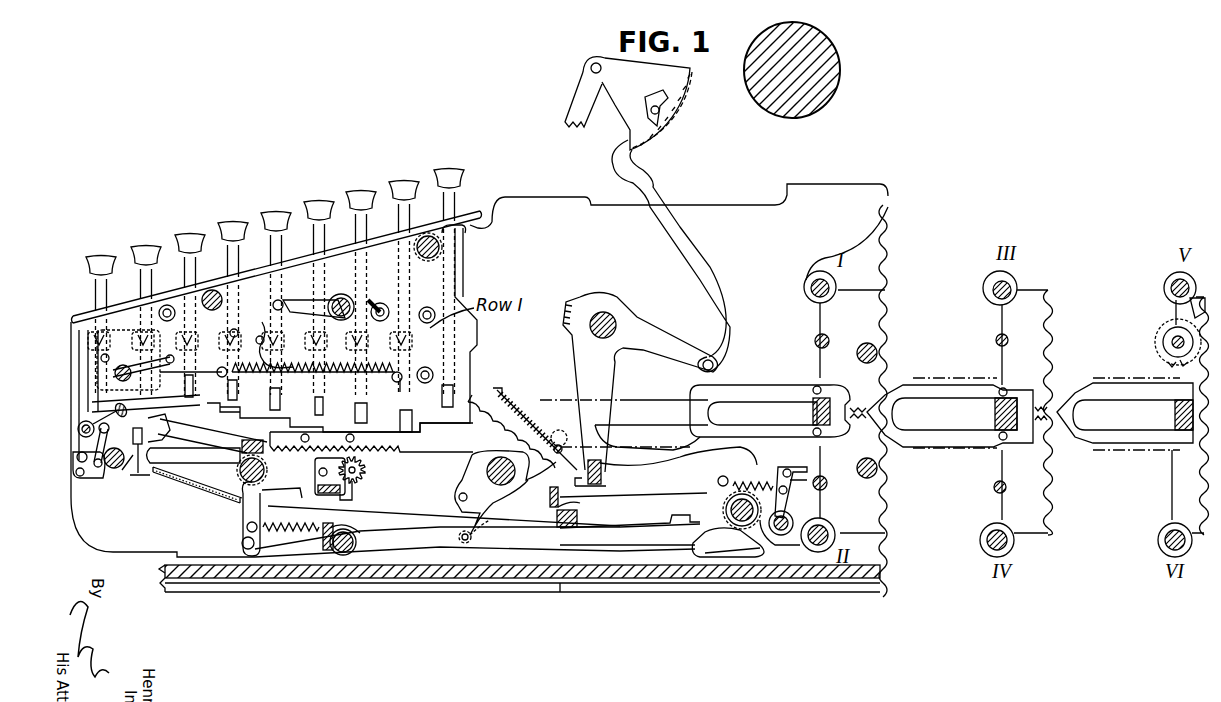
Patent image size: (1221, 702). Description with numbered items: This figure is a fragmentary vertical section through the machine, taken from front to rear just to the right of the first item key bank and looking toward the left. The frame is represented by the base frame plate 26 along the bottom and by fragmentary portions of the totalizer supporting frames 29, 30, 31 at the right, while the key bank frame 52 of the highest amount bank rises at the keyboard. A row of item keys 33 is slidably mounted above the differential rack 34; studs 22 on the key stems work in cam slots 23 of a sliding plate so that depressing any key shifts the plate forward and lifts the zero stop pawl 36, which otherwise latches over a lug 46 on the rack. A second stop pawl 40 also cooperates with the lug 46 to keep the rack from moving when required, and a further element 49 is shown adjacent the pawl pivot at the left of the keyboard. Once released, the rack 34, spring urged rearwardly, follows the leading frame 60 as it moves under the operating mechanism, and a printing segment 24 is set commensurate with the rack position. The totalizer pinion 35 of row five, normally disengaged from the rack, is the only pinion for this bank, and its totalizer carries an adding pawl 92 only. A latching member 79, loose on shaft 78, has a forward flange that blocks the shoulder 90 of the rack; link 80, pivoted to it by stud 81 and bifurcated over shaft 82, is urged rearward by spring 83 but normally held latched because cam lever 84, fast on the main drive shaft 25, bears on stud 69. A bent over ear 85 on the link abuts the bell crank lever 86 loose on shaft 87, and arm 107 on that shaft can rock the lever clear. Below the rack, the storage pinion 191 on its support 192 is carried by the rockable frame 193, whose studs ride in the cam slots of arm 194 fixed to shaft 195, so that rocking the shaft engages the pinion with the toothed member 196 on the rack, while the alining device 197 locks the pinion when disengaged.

The studs 22 is at (262, 335).
The cam slots 23 is at (275, 348).
The printing segment 24 is at (673, 120).
The main drive shaft 25 is at (487, 471).
The base frame plate 26 is at (410, 572).
The totalizer supporting frame 29 is at (876, 294).
The totalizer supporting frame 30 is at (1036, 300).
The totalizer supporting frame 31 is at (1183, 308).
The item keys 33 is at (190, 236).
The differential rack 34 is at (545, 405).
The totalizer pinion 35 is at (1155, 338).
The zero stop pawl 36 is at (152, 436).
The second stop pawl 40 is at (187, 404).
The lug 46 is at (120, 474).
The pivot 49 is at (88, 432).
The key bank frame 52 is at (436, 268).
The leading frame 60 is at (603, 478).
The stud 69 is at (467, 542).
The shaft 78 is at (262, 478).
The latching member 79 is at (190, 484).
The link 80 is at (448, 508).
The stud 81 is at (243, 543).
The shaft 82 is at (728, 505).
The spring 83 is at (275, 530).
The cam lever 84 is at (488, 513).
The bent over ear 85 is at (675, 520).
The bell crank lever 86 is at (792, 508).
The shaft 87 is at (783, 537).
The shoulder 90 is at (140, 476).
The adding pawl 92 is at (1197, 302).
The arm 107 is at (745, 552).
The storage pinion 191 is at (366, 470).
The support 192 is at (368, 488).
The rockable frame 193 is at (262, 494).
The camming arm 194 is at (352, 508).
The shaft 195 is at (345, 555).
The toothed member 196 is at (360, 440).
The alining device 197 is at (322, 470).